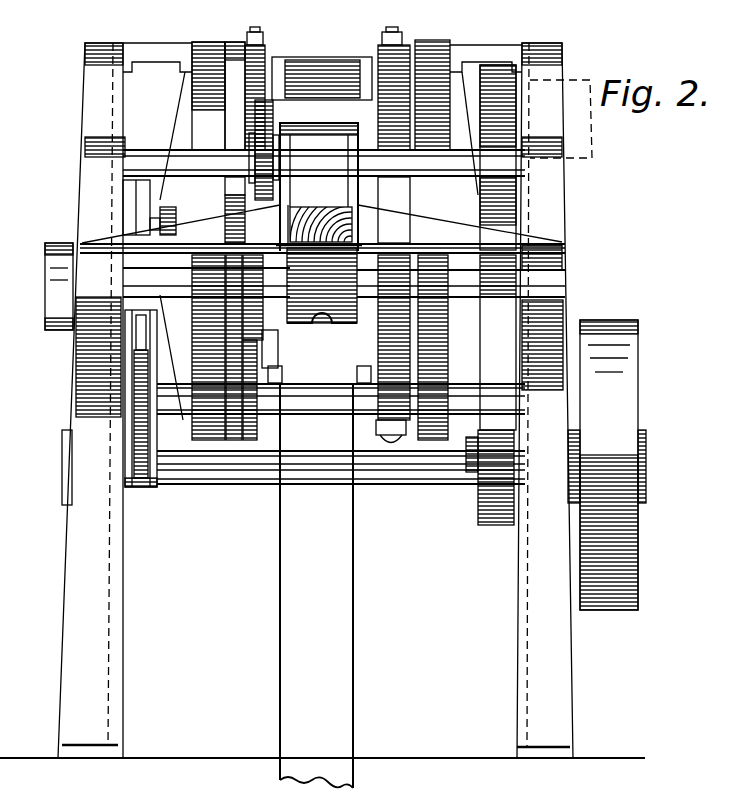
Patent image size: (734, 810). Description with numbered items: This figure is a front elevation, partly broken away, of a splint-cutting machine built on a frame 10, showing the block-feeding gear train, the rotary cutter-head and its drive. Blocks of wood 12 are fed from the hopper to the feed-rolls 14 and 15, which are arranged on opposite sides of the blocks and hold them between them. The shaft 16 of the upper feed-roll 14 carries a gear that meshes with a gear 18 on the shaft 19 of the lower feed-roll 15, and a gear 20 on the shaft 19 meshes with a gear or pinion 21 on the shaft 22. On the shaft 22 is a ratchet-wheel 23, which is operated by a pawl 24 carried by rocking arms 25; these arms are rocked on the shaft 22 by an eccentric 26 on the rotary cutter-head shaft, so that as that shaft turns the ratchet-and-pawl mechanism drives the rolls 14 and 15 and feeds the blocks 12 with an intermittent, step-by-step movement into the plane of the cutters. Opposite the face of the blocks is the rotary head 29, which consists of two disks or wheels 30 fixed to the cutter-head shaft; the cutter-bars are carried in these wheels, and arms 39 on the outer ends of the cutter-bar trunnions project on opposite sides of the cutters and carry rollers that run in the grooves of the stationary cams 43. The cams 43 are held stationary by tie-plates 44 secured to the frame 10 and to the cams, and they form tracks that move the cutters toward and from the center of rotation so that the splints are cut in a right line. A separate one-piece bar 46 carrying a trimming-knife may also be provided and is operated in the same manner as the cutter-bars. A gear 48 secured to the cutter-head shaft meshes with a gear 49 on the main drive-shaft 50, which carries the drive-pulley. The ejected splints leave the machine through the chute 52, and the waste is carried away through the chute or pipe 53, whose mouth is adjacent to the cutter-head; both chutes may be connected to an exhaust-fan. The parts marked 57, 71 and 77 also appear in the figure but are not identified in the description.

The frame 10 is at (75, 344).
The blocks of wood 12 is at (326, 208).
The upper feed-roll 14 is at (303, 123).
The lower feed-roll 15 is at (348, 323).
The shaft 16 is at (143, 157).
The gear 18 is at (268, 340).
The shaft 19 is at (165, 300).
The gear 20 is at (232, 212).
The gear or pinion 21 is at (233, 430).
The shaft 22 is at (337, 407).
The ratchet-wheel 23 is at (142, 436).
The pawl 24 is at (141, 351).
The rocking arms 25 is at (156, 485).
The eccentric 26 is at (138, 196).
The rotary head 29 is at (322, 65).
The disks or wheels 30 is at (260, 55).
The arms 39 is at (280, 422).
The cams or cam-wheels 43 is at (200, 102).
The tie-plates 44 is at (147, 52).
The bar 46 is at (300, 127).
The gear 48 is at (517, 222).
The gear 49 is at (488, 527).
The main drive-shaft 50 is at (435, 472).
The chute 52 is at (595, 146).
The chute or pipe 53 is at (338, 652).
The drum 57 is at (627, 323).
The wall 71 is at (290, 205).
The column 77 is at (240, 123).